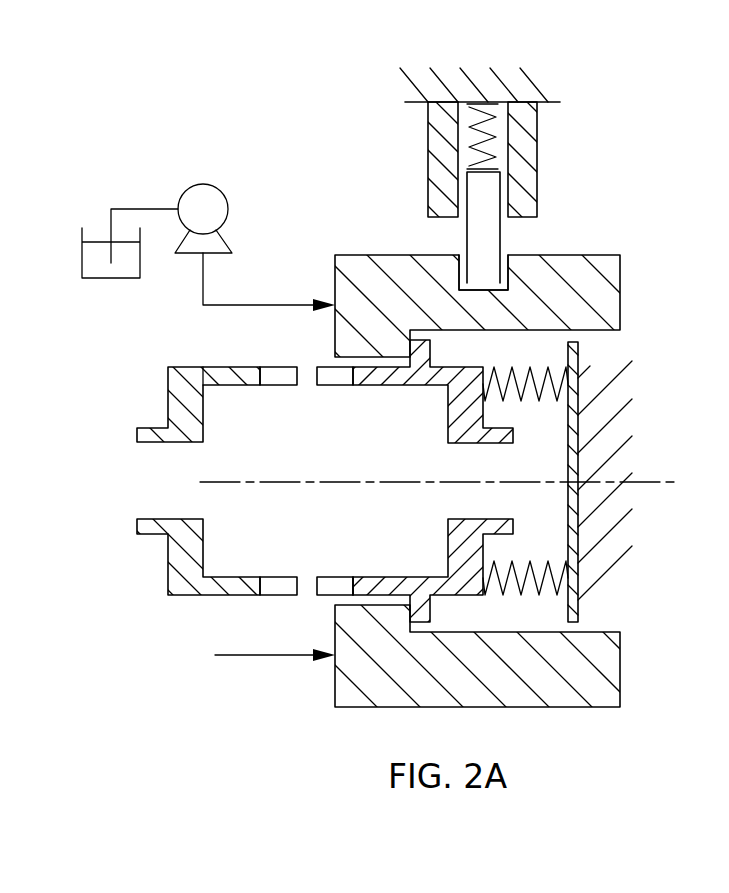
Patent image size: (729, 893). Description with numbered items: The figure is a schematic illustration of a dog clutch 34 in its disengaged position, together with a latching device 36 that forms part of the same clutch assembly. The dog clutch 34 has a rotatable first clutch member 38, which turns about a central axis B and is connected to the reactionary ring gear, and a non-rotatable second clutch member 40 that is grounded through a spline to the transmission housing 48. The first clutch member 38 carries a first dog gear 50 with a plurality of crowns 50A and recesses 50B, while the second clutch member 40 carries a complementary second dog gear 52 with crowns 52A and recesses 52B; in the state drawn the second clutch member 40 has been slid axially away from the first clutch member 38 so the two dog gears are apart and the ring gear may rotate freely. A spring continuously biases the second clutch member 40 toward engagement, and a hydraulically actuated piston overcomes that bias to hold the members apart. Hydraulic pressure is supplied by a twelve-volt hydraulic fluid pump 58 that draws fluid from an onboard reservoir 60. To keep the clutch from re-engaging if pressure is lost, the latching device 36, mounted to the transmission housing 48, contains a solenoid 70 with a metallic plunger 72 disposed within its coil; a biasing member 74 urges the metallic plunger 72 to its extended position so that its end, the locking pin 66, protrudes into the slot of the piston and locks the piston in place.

The dog clutch 34 is at (645, 283).
The latching device 36 is at (516, 330).
The first clutch member 38 is at (190, 372).
The second clutch member 40 is at (455, 432).
The transmission housing 48 is at (542, 101).
The first dog gear 50 is at (230, 378).
The crowns 50A is at (300, 378).
The recesses 50B is at (278, 378).
The second dog gear 52 is at (380, 578).
The crowns 52A is at (313, 578).
The recesses 52B is at (340, 578).
The hydraulic fluid pump 58 is at (218, 212).
The reservoir 60 is at (127, 270).
The locking pin 66 is at (485, 280).
The solenoid 70 is at (528, 134).
The metallic plunger 72 is at (495, 232).
The biasing member 74 is at (487, 148).
The central axis B is at (664, 482).